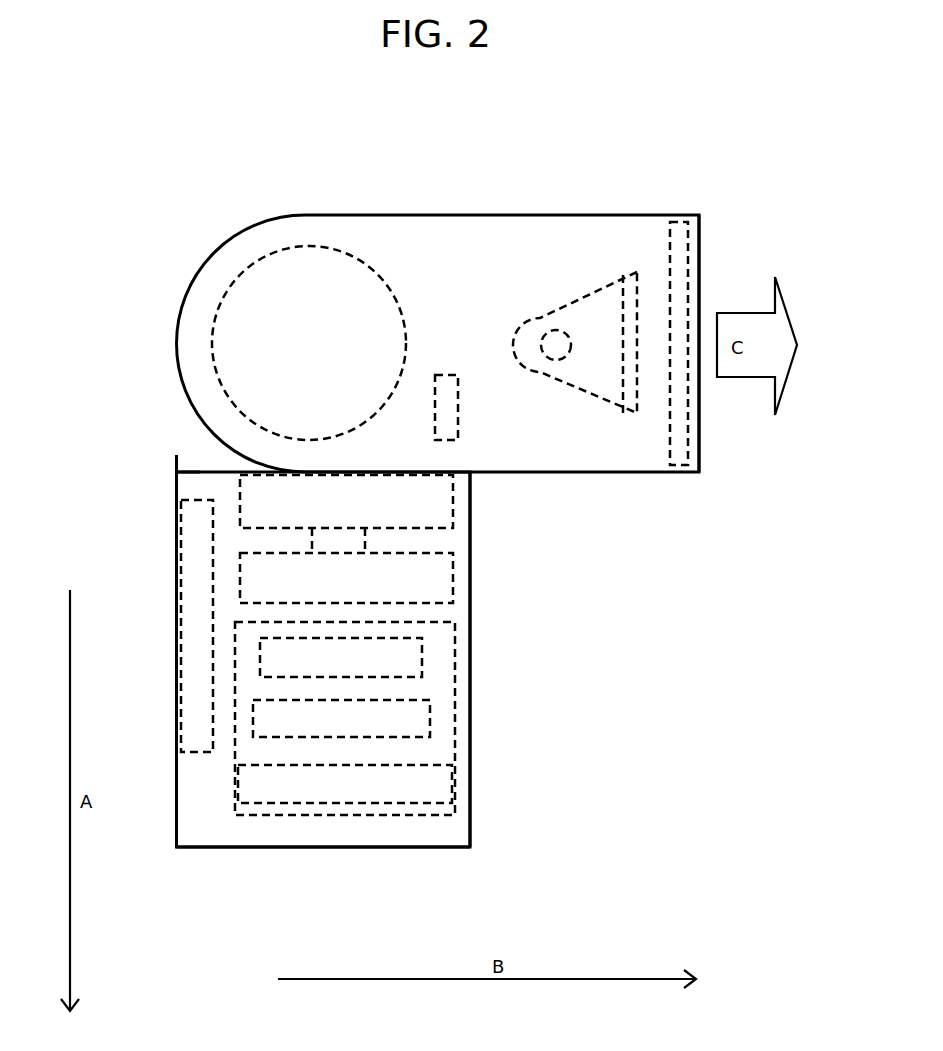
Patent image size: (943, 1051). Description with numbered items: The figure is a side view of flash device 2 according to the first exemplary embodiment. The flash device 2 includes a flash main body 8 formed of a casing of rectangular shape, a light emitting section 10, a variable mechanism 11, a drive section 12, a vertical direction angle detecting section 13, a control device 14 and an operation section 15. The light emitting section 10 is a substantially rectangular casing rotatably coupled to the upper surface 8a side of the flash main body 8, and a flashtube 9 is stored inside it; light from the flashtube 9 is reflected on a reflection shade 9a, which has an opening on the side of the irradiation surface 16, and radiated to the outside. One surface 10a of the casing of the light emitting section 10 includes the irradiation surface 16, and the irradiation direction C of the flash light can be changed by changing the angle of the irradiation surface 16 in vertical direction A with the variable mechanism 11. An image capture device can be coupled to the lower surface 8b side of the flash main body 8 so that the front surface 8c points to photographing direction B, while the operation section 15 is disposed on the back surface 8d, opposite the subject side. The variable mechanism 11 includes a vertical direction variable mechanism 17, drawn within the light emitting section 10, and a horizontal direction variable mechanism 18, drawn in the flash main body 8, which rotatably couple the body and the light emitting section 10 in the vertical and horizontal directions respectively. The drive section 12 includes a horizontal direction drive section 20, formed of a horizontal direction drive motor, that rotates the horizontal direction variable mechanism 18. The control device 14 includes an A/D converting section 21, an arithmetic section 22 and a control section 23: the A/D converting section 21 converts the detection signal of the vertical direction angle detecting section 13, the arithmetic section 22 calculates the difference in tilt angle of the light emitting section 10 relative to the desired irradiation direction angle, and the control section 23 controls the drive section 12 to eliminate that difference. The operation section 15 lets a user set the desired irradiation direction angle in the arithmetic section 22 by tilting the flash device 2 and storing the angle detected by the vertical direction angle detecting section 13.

The flash device 2 is at (80, 107).
The flash main body 8 is at (176, 492).
The upper surface 8a is at (193, 471).
The lower surface 8b is at (408, 848).
The front surface 8c is at (470, 613).
The back surface 8d is at (176, 778).
The flashtube 9 is at (552, 329).
The reflection shade 9a is at (592, 288).
The light emitting section 10 is at (352, 214).
The one surface 10a is at (699, 258).
The variable mechanism 11 is at (377, 343).
The drive section 12 is at (435, 585).
The vertical direction angle detecting section 13 is at (447, 374).
The control device 14 is at (585, 733).
The operation section 15 is at (195, 533).
The irradiation surface 16 is at (699, 430).
The vertical direction variable mechanism 17 is at (266, 254).
The horizontal direction variable mechanism 18 is at (453, 498).
The horizontal direction drive section 20 is at (453, 563).
The A/D converting section 21 is at (436, 803).
The arithmetic section 22 is at (430, 717).
The control section 23 is at (422, 658).